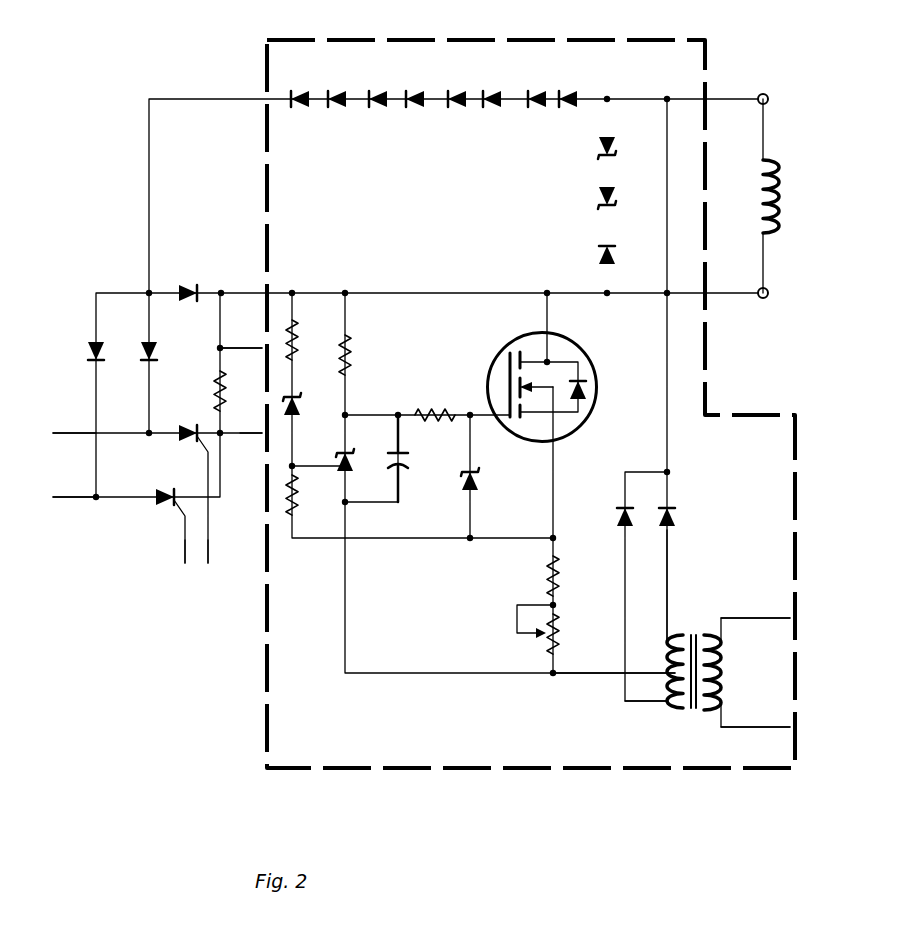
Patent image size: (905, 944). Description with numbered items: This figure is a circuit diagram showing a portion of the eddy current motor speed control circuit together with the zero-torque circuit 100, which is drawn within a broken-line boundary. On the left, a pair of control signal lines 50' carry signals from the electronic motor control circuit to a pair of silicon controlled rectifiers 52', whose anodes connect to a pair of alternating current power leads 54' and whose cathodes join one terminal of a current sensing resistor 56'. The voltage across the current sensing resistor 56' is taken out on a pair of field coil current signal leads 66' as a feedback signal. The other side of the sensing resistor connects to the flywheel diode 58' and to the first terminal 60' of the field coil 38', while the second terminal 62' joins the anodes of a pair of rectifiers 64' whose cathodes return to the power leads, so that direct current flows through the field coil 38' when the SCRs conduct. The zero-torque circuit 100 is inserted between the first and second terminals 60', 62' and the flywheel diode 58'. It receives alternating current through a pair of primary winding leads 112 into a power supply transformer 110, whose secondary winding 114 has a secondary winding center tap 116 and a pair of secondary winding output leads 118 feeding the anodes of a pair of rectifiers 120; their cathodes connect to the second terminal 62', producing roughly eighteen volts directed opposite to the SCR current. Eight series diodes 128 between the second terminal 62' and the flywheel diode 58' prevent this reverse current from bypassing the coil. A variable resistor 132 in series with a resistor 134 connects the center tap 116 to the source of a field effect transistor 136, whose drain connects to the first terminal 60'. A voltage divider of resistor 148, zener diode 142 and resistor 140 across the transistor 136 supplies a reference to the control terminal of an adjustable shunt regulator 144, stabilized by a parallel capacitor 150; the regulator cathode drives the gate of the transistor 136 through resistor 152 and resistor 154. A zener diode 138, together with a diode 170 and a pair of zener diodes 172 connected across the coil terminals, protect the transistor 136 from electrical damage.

The zero-torque circuit 100 is at (580, 38).
The diodes 128 is at (334, 90).
The zener diodes 172 is at (598, 142).
The diode 170 is at (598, 252).
The second terminal of field coil 62' is at (784, 90).
The first terminal of field coil 60' is at (782, 304).
The field coil 38' is at (797, 196).
The flywheel diode 58' is at (189, 275).
The rectifiers 64' is at (122, 339).
The alternating current power leads 54' is at (74, 448).
The field coil current signal leads 66' is at (241, 376).
The current sensing resistor 56' is at (202, 391).
The silicon controlled rectifiers 52' is at (172, 494).
The control signal lines 50' is at (197, 551).
The resistor 148 is at (297, 338).
The resistor 152 is at (352, 350).
The zener diode 142 is at (297, 409).
The adjustable shunt regulator 144 is at (348, 470).
The resistor 140 is at (297, 503).
The resistor 154 is at (435, 400).
The capacitor 150 is at (410, 456).
The zener diode 138 is at (480, 486).
The field effect transistor 136 is at (592, 360).
The resistor 134 is at (547, 574).
The variable resistor 132 is at (558, 628).
The rectifiers 120 is at (618, 506).
The secondary winding output leads 118 is at (669, 555).
The secondary winding 114 is at (678, 632).
The power supply transformer 110 is at (694, 672).
The secondary winding center tap 116 is at (648, 670).
The primary winding leads 112 is at (748, 617).